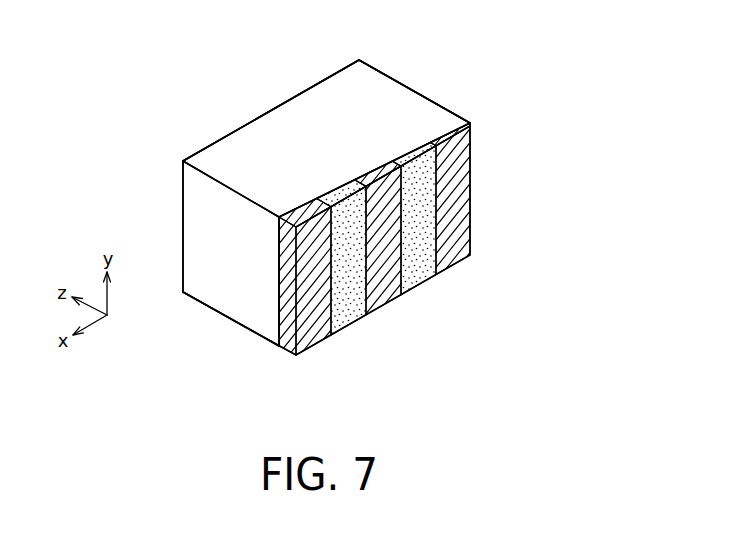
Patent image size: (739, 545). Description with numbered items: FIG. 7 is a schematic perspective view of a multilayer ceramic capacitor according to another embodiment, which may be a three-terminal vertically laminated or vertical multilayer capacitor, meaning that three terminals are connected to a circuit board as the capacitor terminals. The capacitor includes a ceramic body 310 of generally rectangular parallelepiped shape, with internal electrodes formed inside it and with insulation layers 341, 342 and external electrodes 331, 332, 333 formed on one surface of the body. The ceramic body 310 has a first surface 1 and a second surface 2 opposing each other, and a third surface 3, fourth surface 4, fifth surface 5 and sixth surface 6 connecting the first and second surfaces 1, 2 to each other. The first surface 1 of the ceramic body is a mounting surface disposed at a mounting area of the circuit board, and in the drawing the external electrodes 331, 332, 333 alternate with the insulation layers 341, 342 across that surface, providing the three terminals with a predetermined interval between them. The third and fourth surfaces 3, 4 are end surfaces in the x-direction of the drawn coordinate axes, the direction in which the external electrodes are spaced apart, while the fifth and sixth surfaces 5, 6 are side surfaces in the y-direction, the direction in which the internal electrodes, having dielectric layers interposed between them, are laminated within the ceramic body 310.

The first surface 1 is at (340, 219).
The second surface 2 is at (242, 147).
The third surface 3 is at (215, 285).
The fourth surface 4 is at (425, 107).
The fifth surface 5 is at (323, 113).
The sixth surface 6 is at (260, 325).
The ceramic body 310 is at (193, 212).
The external electrode 331 is at (310, 347).
The external electrode 332 is at (392, 297).
The external electrode 333 is at (468, 173).
The insulation layer 341 is at (348, 317).
The insulation layer 342 is at (427, 277).